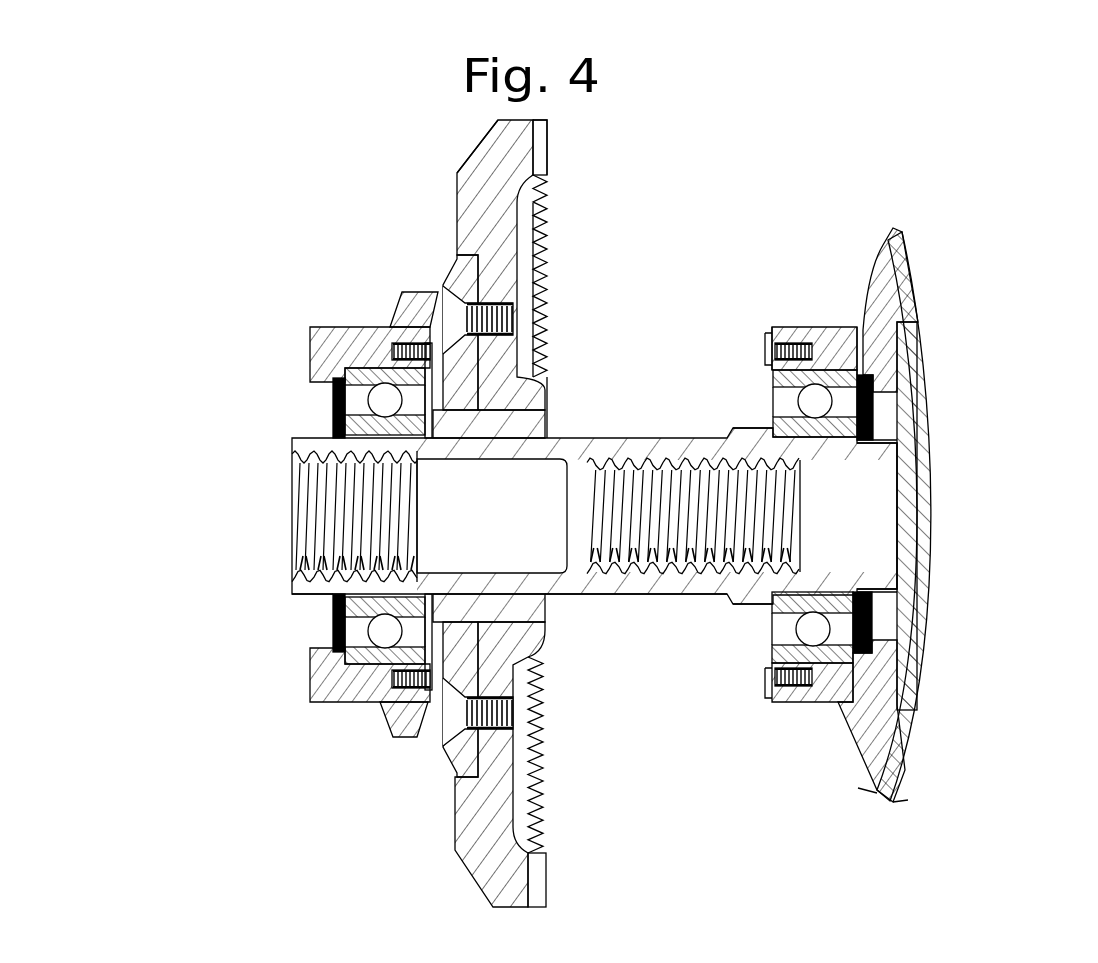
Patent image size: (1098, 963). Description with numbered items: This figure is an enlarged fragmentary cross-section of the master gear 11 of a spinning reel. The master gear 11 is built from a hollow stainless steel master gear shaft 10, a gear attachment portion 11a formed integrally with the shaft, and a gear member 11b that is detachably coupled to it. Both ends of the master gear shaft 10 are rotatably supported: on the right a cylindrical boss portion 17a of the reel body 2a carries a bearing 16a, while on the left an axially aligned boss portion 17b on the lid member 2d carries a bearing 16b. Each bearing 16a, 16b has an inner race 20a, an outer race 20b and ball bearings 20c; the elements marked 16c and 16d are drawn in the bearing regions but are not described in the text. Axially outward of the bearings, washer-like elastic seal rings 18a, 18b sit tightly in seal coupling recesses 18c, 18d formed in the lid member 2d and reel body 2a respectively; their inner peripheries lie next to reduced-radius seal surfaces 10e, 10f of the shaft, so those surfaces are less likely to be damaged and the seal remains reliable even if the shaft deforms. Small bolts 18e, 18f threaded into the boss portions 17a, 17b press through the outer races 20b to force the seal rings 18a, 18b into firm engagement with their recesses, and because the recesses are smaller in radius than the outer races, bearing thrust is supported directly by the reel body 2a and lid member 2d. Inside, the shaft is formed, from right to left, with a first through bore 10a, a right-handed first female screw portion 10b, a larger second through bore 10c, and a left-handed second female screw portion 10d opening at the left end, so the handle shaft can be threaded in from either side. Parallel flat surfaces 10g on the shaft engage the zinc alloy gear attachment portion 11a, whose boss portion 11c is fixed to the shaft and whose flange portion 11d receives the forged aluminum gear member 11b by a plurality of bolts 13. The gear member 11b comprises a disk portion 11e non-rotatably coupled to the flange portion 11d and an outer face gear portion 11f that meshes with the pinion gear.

The reel body 2a is at (913, 270).
The lid member 2d is at (410, 740).
The master gear shaft 10 is at (608, 505).
The first through bore 10a is at (920, 445).
The first female screw portion 10b is at (742, 430).
The second through bore 10c is at (600, 460).
The second female screw portion 10d is at (333, 645).
The seal surface 10e is at (340, 600).
The seal surface 10f is at (905, 610).
The flat surfaces 10g is at (545, 615).
The master gear 11 is at (538, 510).
The gear attachment portion 11a is at (455, 265).
The gear member 11b is at (468, 162).
The boss portion 11c is at (545, 593).
The flange portion 11d is at (460, 765).
The disk portion 11e is at (468, 178).
The face gear portion 11f is at (548, 148).
The bolts 13 is at (540, 300).
The bearing 16a is at (824, 365).
The bearing 16b is at (470, 322).
The spring 16c is at (392, 348).
The spring 16d is at (818, 335).
The boss portion 17a is at (818, 690).
The boss portion 17b is at (395, 695).
The seal ring 18a is at (385, 400).
The seal ring 18b is at (925, 385).
The seal coupling recess 18c is at (345, 378).
The seal coupling recess 18d is at (913, 287).
The small bolt 18e is at (470, 350).
The small bolt 18f is at (803, 340).
The inner race 20a is at (333, 430).
The outer race 20b is at (505, 335).
The ball bearings 20c is at (333, 400).